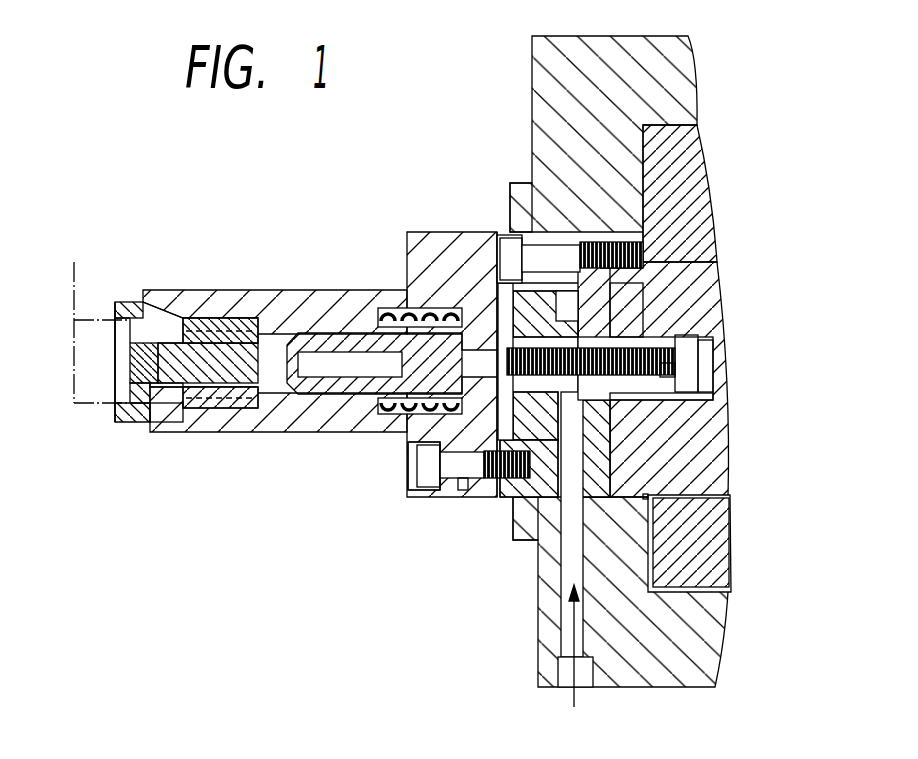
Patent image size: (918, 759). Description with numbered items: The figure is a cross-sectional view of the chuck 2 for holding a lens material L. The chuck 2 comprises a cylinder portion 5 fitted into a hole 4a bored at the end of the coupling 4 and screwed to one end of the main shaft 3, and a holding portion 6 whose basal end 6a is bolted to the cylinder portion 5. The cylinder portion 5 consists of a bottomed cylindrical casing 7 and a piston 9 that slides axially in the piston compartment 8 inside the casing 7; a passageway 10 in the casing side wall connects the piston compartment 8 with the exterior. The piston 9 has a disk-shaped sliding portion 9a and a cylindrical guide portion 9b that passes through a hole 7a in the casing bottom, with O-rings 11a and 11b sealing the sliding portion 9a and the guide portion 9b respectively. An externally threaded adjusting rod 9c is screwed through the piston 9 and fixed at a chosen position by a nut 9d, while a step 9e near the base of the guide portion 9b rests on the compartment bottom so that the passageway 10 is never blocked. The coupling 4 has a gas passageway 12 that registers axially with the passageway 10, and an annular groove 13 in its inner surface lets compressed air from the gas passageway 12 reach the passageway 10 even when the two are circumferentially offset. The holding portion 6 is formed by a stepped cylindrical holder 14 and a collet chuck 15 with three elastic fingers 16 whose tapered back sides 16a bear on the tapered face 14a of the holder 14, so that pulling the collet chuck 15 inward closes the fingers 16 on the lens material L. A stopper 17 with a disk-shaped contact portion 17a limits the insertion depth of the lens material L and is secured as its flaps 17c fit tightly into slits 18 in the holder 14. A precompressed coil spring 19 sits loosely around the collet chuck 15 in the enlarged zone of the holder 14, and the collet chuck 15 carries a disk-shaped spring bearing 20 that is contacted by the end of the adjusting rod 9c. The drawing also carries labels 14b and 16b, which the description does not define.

The chuck 2 is at (51, 250).
The main shaft 3 is at (623, 480).
The coupling 4 is at (690, 645).
The hole 4a is at (655, 238).
The cylinder portion 5 is at (550, 223).
The holding portion 6 is at (345, 219).
The basal end 6a is at (443, 496).
The casing 7 is at (516, 527).
The hole 7a is at (683, 370).
The piston compartment 8 is at (572, 423).
The piston 9 is at (712, 263).
The sliding portion 9a is at (498, 492).
The guide portion 9b is at (650, 400).
The adjusting rod 9c is at (520, 300).
The nut 9d is at (700, 345).
The step 9e is at (560, 300).
The passageway 10 is at (647, 497).
The O-ring 11a is at (512, 222).
The O-ring 11b is at (690, 326).
The gas passageway 12 is at (565, 626).
The annular groove 13 is at (650, 548).
The holder 14 is at (245, 433).
The tapered face 14a is at (172, 400).
The sleeve shoulder 14b is at (186, 393).
The collet chuck 15 is at (283, 397).
The elastic fingers 16 is at (116, 422).
The back sides 16a is at (152, 297).
The collet body 16b is at (197, 320).
The stopper 17 is at (130, 305).
The contact portion 17a is at (125, 358).
The flaps 17c is at (210, 318).
The slits 18 is at (243, 292).
The coil spring 19 is at (392, 314).
The spring bearing 20 is at (463, 488).
The lens material L is at (98, 315).